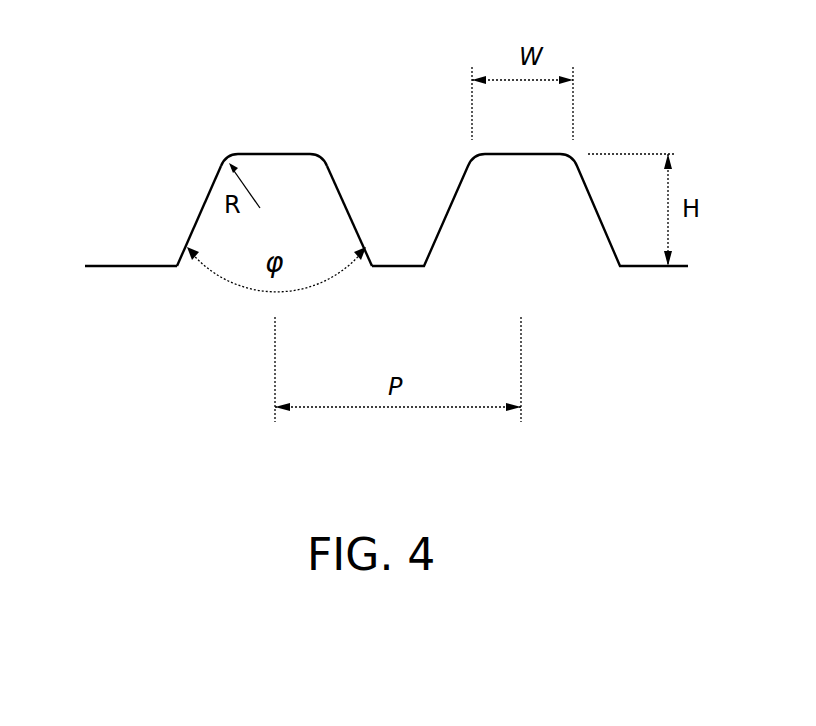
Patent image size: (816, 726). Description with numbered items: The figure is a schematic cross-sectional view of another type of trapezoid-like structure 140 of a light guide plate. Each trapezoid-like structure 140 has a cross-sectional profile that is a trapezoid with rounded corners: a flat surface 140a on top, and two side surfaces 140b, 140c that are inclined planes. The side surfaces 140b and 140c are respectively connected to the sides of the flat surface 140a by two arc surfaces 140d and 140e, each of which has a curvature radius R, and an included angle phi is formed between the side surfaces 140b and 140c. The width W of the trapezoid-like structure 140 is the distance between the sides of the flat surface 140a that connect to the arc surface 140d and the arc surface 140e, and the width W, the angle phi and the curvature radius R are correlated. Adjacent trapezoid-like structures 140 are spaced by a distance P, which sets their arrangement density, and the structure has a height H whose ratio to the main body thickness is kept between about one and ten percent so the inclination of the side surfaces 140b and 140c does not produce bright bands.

The trapezoid-like structure 140 is at (364, 146).
The flat surface 140a is at (245, 153).
The side surface 140b is at (195, 208).
The side surface 140c is at (350, 208).
The arc surface 140d is at (220, 163).
The arc surface 140e is at (318, 153).